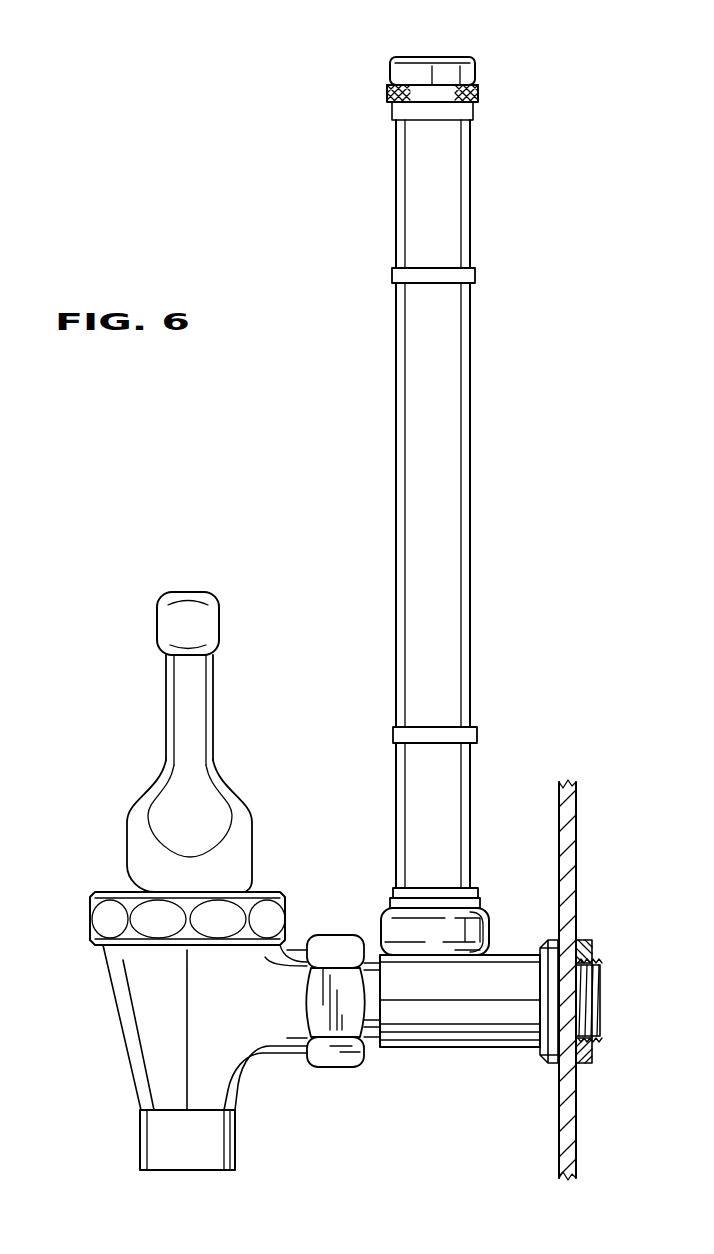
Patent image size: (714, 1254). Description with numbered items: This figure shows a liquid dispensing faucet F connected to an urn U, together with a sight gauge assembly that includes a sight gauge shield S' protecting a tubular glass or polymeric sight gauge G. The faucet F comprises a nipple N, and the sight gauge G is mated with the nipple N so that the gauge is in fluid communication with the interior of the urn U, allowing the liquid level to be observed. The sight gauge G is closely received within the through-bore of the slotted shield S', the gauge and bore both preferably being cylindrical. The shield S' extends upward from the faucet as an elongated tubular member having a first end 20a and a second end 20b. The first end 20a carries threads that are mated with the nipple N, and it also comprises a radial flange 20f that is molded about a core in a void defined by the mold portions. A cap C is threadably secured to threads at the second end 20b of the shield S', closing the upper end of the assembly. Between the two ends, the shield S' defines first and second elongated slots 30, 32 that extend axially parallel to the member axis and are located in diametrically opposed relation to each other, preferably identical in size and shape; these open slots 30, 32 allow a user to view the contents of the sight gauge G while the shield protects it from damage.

The cap C is at (481, 60).
The second end 20b is at (485, 104).
The first elongated slot 30 is at (396, 358).
The second elongated slot 32 is at (472, 494).
The sight gauge G is at (437, 504).
The sight gauge shield S' is at (504, 387).
The first end 20a is at (436, 881).
The radial flange 20f is at (479, 891).
The nipple N is at (396, 931).
The faucet F is at (297, 838).
The urn U is at (573, 869).